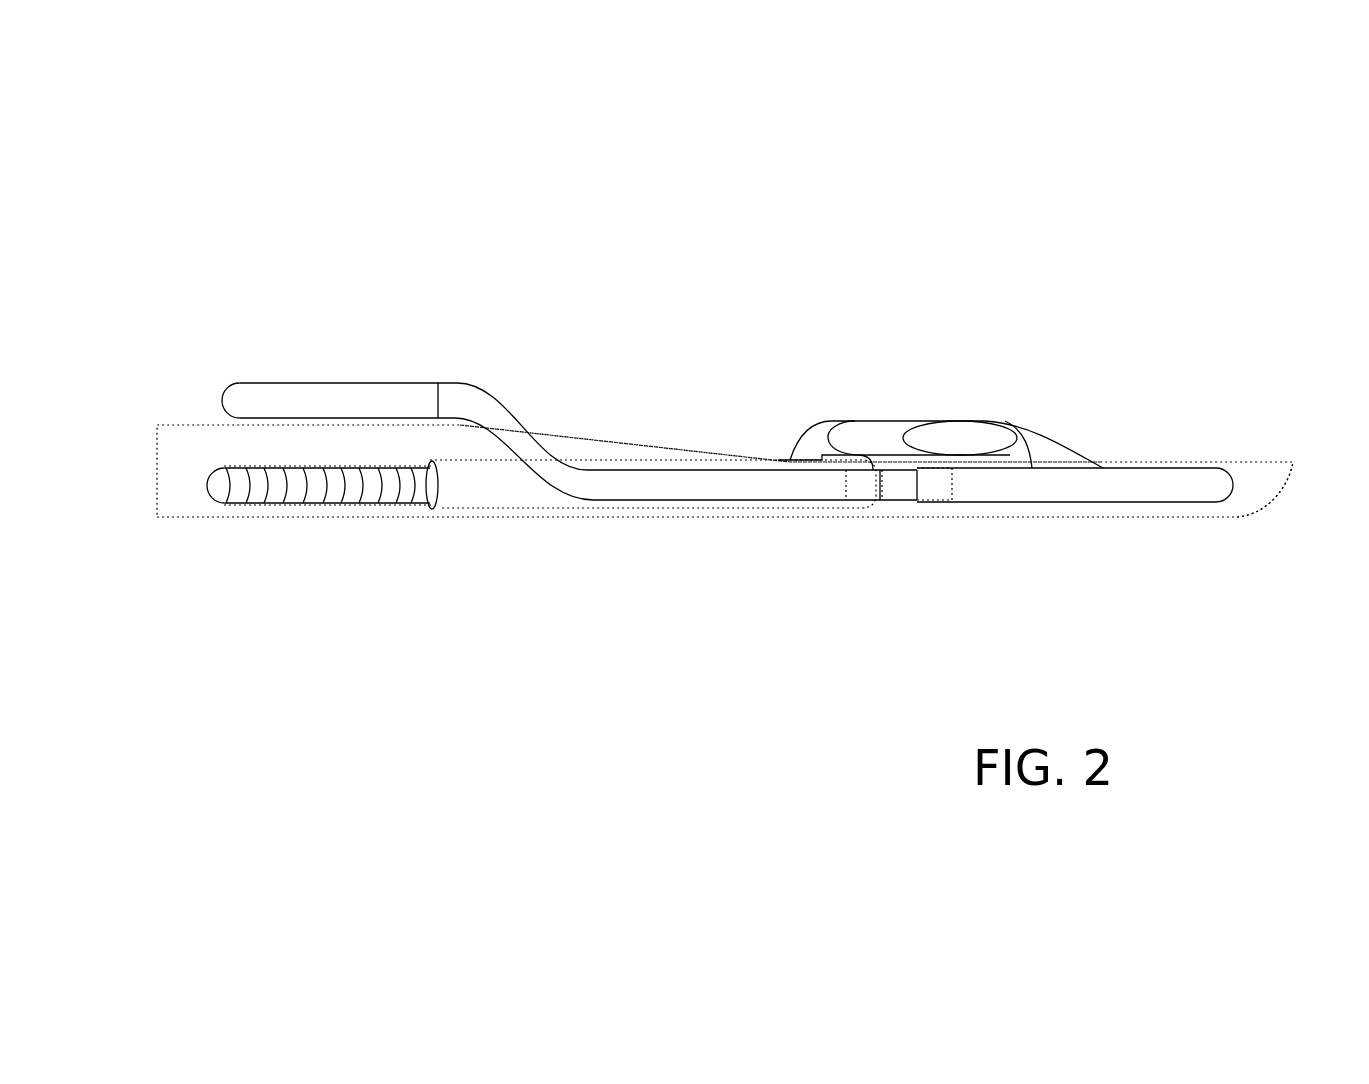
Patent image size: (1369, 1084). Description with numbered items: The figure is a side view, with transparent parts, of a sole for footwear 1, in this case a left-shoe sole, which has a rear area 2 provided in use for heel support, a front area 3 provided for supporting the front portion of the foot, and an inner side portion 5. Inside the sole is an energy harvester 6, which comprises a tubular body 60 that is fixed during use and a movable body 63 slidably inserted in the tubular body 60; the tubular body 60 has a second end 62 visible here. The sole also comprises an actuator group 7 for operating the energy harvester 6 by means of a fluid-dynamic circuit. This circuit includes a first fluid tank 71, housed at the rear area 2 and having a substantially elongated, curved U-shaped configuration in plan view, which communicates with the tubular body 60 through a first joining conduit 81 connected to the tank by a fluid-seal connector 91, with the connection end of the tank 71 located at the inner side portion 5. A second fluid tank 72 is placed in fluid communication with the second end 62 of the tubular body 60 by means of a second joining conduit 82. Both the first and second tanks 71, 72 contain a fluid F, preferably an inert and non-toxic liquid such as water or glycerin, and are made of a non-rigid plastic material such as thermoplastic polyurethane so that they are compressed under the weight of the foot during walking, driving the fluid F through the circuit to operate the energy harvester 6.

The sole for footwear 1 is at (762, 300).
The rear area 2 is at (167, 447).
The front area 3 is at (1273, 477).
The inner side portion 5 is at (740, 513).
The energy harvester 6 is at (531, 379).
The tubular body 60 is at (662, 460).
The second end 62 is at (427, 510).
The movable body 63 is at (300, 522).
The actuator group 7 is at (322, 346).
The first fluid tank 71 is at (250, 383).
The second fluid tank 72 is at (917, 420).
The first joining conduit 81 is at (1177, 483).
The second joining conduit 82 is at (220, 467).
The fluid-seal connector 91 is at (908, 510).
The fluid F is at (372, 397).